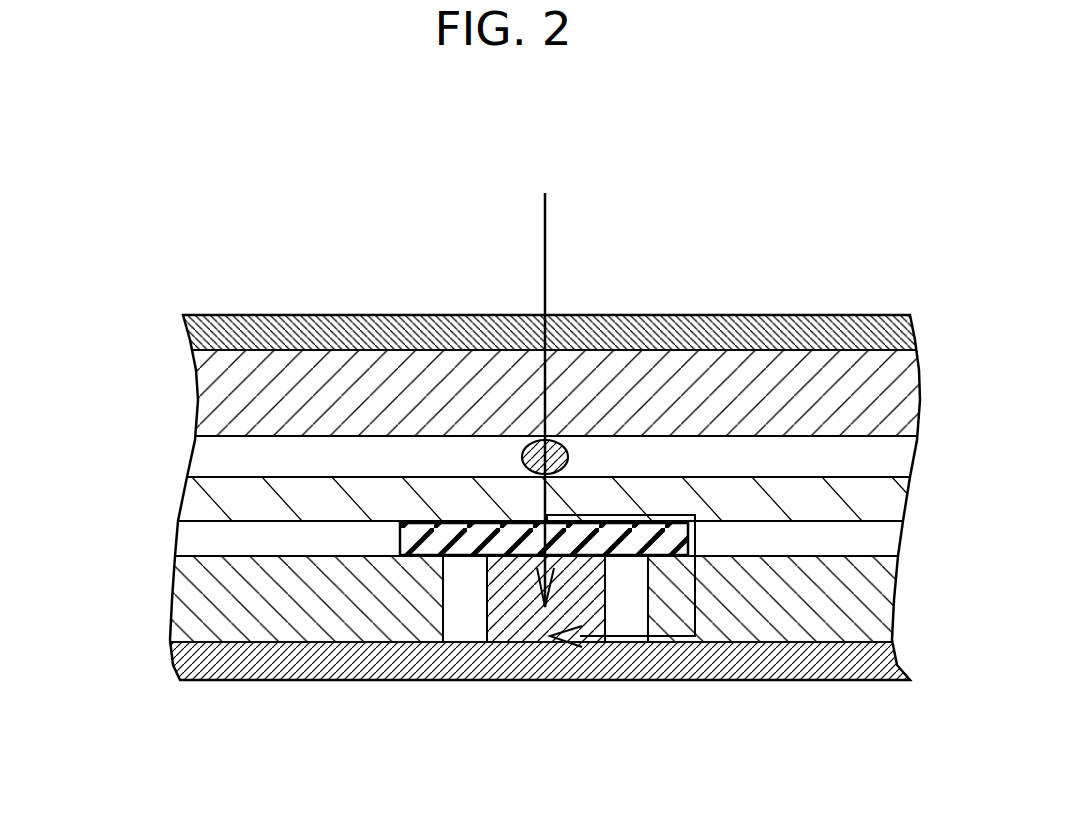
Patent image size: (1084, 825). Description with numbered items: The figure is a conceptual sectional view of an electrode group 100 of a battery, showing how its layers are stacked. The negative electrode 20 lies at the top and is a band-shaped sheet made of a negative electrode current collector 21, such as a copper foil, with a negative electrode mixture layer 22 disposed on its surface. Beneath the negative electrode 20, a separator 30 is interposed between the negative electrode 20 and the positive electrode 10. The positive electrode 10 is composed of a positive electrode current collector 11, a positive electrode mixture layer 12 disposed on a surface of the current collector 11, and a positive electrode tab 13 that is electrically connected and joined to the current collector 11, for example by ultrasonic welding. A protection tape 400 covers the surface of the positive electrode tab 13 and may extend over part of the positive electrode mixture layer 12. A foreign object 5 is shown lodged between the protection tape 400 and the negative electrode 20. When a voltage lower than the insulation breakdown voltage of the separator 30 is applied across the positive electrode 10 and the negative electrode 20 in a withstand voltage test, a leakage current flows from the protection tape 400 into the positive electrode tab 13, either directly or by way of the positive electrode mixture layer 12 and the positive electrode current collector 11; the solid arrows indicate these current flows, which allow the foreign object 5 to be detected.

The electrode group 100 is at (208, 193).
The positive electrode 10 is at (455, 755).
The positive electrode current collector 11 is at (335, 660).
The positive electrode mixture layer 12 is at (383, 617).
The positive electrode tab 13 is at (520, 625).
The negative electrode 20 is at (882, 236).
The negative electrode current collector 21 is at (753, 325).
The negative electrode mixture layer 22 is at (855, 368).
The separator 30 is at (197, 500).
The protection tape 400 is at (480, 523).
The foreign object 5 is at (568, 447).